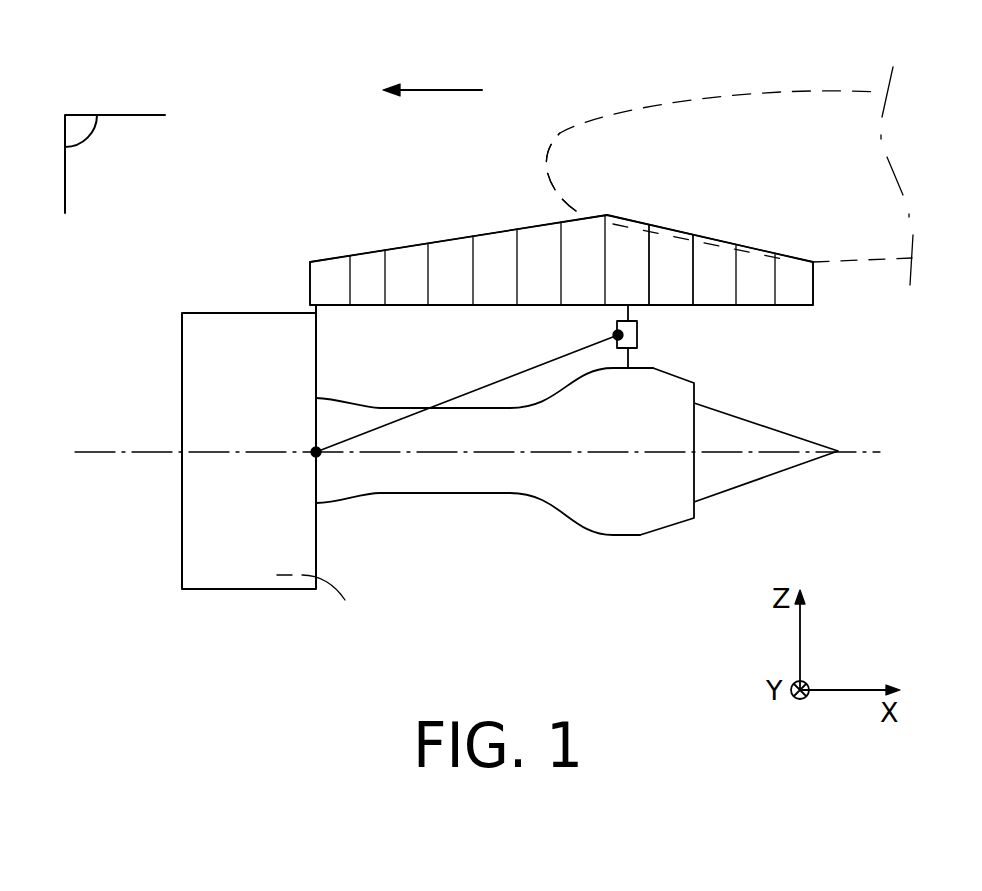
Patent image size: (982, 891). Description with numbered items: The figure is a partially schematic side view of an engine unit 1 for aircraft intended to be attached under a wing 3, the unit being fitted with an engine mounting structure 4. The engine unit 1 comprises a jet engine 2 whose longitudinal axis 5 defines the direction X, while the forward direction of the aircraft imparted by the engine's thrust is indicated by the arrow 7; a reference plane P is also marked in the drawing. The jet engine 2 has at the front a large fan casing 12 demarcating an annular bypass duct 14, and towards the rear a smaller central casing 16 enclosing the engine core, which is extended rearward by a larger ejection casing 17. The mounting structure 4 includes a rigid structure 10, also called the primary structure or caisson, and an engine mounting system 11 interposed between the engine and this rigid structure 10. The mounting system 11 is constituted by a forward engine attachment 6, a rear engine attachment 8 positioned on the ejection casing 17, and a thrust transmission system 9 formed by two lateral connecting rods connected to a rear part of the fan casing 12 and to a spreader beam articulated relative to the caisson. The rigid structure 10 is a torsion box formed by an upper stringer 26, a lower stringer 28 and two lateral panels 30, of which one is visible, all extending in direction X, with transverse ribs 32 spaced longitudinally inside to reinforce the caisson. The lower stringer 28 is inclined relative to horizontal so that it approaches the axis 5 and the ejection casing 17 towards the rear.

The engine unit 1 is at (263, 230).
The jet engine 2 is at (489, 515).
The wing 3 is at (612, 118).
The engine mounting structure 4 is at (390, 232).
The longitudinal axis 5 is at (95, 453).
The forward engine attachment 6 is at (320, 308).
The arrow 7 is at (425, 90).
The rear engine attachment 8 is at (613, 344).
The thrust transmission system 9 is at (444, 400).
The rigid structure 10 is at (475, 234).
The engine mounting system 11 is at (474, 379).
The fan casing 12 is at (193, 590).
The annular bypass duct 14 is at (345, 600).
The central casing 16 is at (431, 495).
The ejection casing 17 is at (625, 537).
The upper stringer 26 is at (537, 223).
The lower stringer 28 is at (735, 306).
The lateral panel 30 is at (363, 266).
The transverse ribs 32 is at (690, 270).
The reference plane P is at (84, 119).